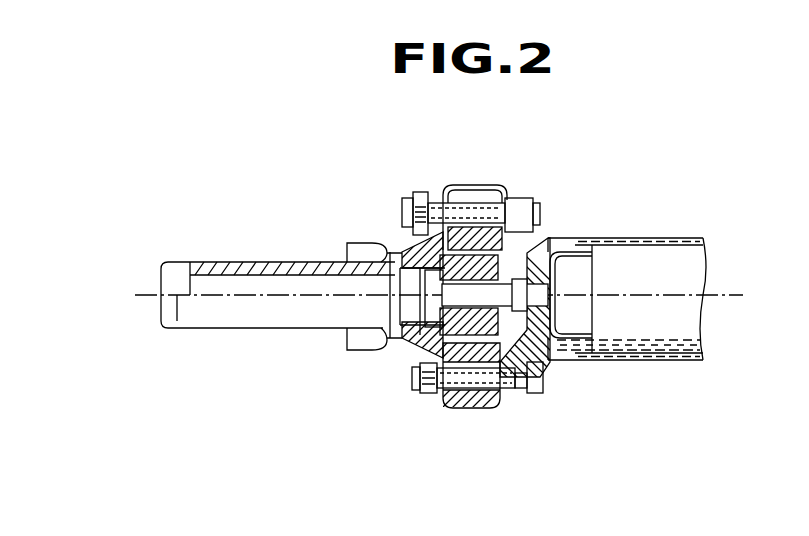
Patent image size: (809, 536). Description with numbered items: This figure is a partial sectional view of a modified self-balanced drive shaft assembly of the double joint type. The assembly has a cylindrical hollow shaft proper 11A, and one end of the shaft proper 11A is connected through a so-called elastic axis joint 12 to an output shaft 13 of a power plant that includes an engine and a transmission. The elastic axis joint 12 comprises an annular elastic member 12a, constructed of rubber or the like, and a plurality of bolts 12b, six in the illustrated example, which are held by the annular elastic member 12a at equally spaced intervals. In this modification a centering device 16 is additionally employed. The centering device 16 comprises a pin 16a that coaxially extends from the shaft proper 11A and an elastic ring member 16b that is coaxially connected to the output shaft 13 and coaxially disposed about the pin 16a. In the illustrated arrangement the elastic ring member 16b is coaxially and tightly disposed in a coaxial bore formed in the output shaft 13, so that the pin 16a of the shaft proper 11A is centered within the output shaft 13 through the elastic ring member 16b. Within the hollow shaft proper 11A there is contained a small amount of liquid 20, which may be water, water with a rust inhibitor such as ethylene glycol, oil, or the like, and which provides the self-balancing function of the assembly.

The shaft proper 11A is at (677, 238).
The elastic axis joint 12 is at (504, 182).
The annular elastic member 12a is at (437, 353).
The bolts 12b is at (430, 193).
The output shaft 13 is at (243, 262).
The centering device 16 is at (512, 324).
The pin 16a is at (514, 278).
The elastic ring member 16b is at (420, 258).
The liquid 20 is at (672, 356).